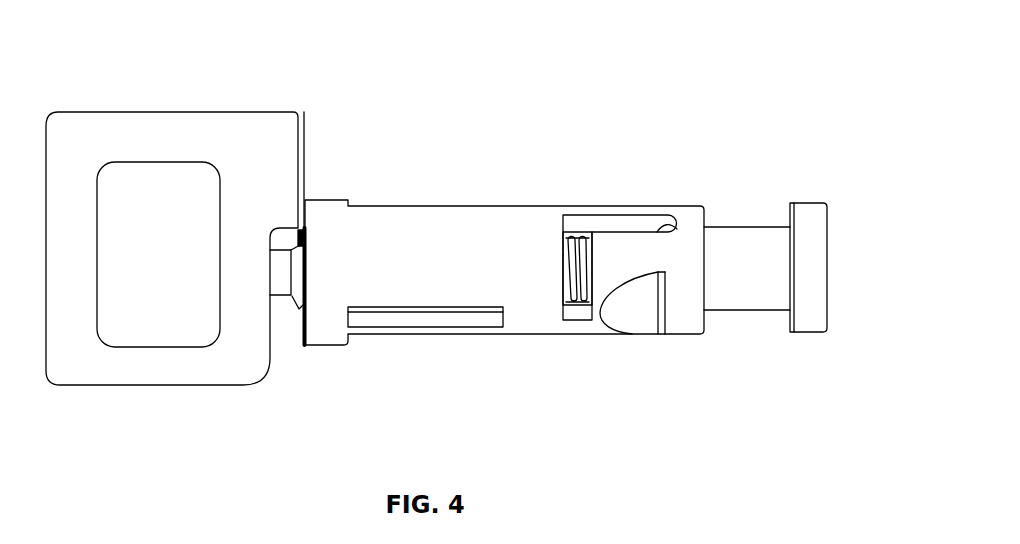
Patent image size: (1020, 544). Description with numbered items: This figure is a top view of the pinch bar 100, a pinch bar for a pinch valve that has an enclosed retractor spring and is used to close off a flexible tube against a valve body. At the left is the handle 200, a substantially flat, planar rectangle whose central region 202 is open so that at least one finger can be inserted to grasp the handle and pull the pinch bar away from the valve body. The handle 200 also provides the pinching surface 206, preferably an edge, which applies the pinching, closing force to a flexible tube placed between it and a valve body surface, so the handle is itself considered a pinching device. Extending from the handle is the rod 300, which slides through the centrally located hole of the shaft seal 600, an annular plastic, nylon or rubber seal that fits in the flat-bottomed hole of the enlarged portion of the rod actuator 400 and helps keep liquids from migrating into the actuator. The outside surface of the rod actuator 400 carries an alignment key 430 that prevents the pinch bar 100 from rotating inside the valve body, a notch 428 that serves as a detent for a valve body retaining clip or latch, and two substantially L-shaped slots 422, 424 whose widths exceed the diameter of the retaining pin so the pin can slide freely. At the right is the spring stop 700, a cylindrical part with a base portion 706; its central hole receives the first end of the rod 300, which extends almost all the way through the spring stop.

The pinch bar 100 is at (739, 31).
The handle 200 is at (292, 141).
The central region 202 is at (143, 313).
The pinching surface 206 is at (308, 163).
The rod 300 is at (278, 290).
The shaft seal 600 is at (305, 252).
The rod actuator 400 is at (537, 323).
The alignment key 430 is at (437, 322).
The L-shaped slot 422 is at (628, 222).
The L-shaped slot 424 is at (570, 233).
The notch 428 is at (639, 312).
The spring stop 700 is at (737, 227).
The base portion 706 is at (810, 332).